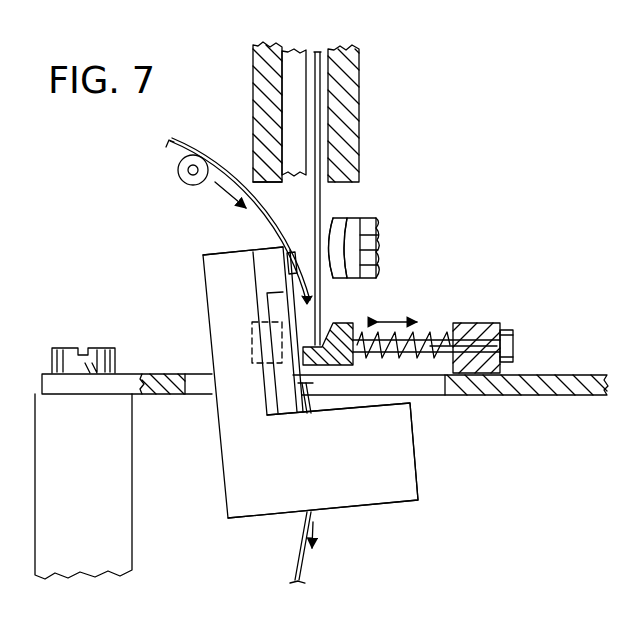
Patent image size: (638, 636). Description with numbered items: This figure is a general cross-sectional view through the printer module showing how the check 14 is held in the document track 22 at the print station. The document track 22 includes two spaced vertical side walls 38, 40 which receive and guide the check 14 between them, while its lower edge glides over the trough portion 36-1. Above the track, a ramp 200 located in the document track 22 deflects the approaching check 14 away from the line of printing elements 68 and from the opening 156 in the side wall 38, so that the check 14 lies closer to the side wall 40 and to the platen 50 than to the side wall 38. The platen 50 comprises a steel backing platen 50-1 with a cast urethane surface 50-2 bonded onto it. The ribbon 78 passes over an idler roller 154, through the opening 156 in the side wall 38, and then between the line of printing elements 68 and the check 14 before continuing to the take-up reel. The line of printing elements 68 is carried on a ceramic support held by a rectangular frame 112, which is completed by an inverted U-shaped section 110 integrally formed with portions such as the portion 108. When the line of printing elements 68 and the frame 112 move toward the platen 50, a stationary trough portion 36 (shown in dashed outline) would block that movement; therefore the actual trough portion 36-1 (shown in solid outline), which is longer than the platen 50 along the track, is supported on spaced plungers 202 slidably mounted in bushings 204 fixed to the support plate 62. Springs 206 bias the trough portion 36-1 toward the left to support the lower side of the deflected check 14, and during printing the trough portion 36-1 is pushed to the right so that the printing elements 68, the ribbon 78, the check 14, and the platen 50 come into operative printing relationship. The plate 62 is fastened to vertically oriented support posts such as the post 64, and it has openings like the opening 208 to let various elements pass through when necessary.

The check 14 is at (322, 70).
The document track 22 is at (365, 41).
The trough portion 36 is at (253, 343).
The trough portion 36-1 is at (341, 323).
The side wall 38 is at (260, 82).
The side wall 40 is at (352, 110).
The platen 50 is at (357, 245).
The steel backing platen 50-1 is at (355, 218).
The cast urethane surface 50-2 is at (336, 220).
The plate 62 is at (555, 400).
The support post 64 is at (118, 495).
The line of printing elements 68 is at (289, 259).
The ribbon 78 is at (233, 170).
The portion 108 is at (262, 487).
The inverted U-shaped section 110 is at (213, 290).
The rectangular frame 112 is at (224, 268).
The idler roller 154 is at (178, 170).
The opening 156 is at (265, 184).
The ramp 200 is at (297, 55).
The plunger 202 is at (465, 340).
The bushing 204 is at (492, 323).
The spring 206 is at (429, 336).
The opening 208 is at (193, 395).